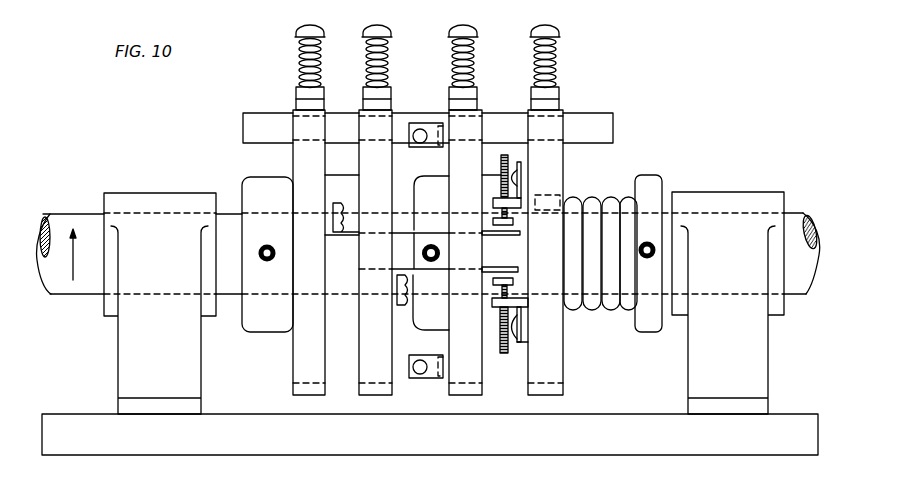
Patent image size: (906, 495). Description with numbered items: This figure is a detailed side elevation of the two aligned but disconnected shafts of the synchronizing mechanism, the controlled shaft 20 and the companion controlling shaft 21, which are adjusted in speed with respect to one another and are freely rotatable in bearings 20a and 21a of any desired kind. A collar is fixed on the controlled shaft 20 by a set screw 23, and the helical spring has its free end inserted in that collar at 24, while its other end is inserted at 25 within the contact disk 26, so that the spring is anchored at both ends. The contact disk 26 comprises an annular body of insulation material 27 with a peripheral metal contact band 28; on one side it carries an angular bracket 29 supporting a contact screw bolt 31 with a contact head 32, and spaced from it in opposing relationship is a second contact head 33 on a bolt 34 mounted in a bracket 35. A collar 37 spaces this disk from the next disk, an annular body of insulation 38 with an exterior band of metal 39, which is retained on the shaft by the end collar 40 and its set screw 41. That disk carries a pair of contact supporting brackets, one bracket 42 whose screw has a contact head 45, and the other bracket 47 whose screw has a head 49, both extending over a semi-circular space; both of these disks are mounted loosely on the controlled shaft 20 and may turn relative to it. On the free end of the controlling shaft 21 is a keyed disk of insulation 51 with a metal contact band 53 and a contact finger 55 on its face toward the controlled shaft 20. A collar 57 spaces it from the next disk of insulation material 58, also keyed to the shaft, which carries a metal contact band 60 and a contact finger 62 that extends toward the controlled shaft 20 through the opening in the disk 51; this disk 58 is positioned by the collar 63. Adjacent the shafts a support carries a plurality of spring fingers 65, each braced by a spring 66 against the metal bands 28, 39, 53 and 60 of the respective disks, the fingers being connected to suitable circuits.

The controlled shaft 20 is at (795, 213).
The bearing 20a is at (722, 192).
The controlling shaft 21 is at (65, 216).
The bearing 21a is at (142, 198).
The set screw 23 is at (655, 258).
The spring end insertion in collar 24 is at (652, 195).
The spring end insertion in contact disk 25 is at (562, 193).
The contact disk 26 is at (563, 331).
The annular body of insulation material 27 is at (563, 353).
The metal contact band 28 is at (547, 395).
The angular bracket 29 is at (522, 176).
The contact screw bolt 31 is at (508, 156).
The contact head 32 is at (513, 222).
The second contact head 33 is at (513, 282).
The bolt 34 is at (504, 353).
The bracket 35 is at (528, 311).
The collar 37 is at (488, 188).
The annular body of insulation 38 is at (449, 343).
The exterior band of metal 39 is at (467, 395).
The end collar 40 is at (420, 182).
The set screw 41 is at (422, 258).
The contact supporting bracket 42 is at (434, 122).
The contact head 45 is at (417, 128).
The bracket 47 is at (437, 378).
The head 49 is at (415, 374).
The disk of insulation 51 is at (359, 361).
The metal contact band 53 is at (377, 395).
The contact finger 55 is at (501, 266).
The collar 57 is at (340, 183).
The disk of insulation material 58 is at (293, 353).
The metal contact band 60 is at (313, 395).
The contact finger 62 is at (514, 234).
The collar 63 is at (248, 185).
The spring finger 65 is at (363, 93).
The spring 66 is at (365, 53).